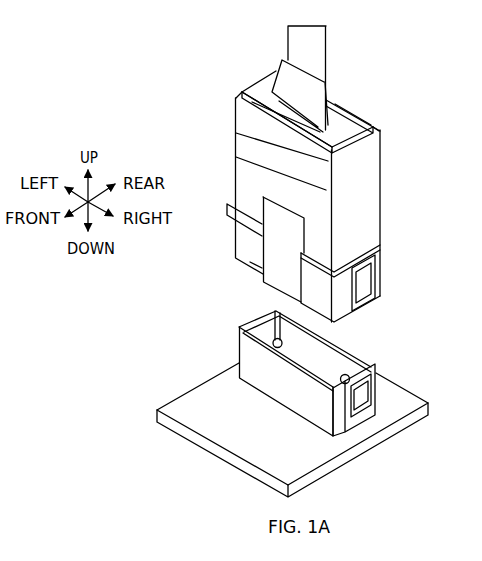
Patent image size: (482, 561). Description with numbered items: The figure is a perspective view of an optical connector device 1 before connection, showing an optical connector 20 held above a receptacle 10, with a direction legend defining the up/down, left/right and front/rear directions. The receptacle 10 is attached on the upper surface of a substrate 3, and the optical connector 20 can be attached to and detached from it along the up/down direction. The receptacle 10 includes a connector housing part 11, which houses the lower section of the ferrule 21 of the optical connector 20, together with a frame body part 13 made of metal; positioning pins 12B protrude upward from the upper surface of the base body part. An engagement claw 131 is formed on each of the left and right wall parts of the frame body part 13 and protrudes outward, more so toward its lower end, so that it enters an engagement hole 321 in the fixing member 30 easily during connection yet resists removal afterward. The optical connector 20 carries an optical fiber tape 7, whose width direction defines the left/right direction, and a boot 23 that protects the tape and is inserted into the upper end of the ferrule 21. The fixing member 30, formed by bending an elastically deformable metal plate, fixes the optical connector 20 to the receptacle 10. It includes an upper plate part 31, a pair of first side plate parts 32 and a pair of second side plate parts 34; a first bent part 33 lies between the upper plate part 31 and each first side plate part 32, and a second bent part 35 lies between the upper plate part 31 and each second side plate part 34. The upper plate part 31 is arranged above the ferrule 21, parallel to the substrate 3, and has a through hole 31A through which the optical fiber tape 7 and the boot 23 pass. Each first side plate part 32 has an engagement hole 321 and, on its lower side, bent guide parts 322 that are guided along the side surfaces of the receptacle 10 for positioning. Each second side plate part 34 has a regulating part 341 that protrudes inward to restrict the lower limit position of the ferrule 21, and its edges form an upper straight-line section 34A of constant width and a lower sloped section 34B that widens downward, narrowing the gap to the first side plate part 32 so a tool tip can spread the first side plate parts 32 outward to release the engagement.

The optical connector device 1 is at (198, 98).
The substrate 3 is at (192, 403).
The optical fiber tape 7 is at (313, 40).
The receptacle 10 is at (452, 317).
The connector housing part 11 is at (309, 373).
The positioning pins 12B is at (271, 337).
The frame body part 13 is at (255, 364).
The optical connector 20 is at (450, 120).
The ferrule 21 is at (256, 263).
The boot 23 is at (333, 95).
The fixing member 30 is at (307, 174).
The upper plate part 31 is at (352, 117).
The through hole 31A is at (342, 112).
The first side plate parts 32 is at (371, 226).
The first bent part 33 is at (248, 87).
The second side plate parts 34 is at (252, 210).
The straight-line section 34A is at (233, 135).
The sloped section 34B is at (233, 160).
The second bent part 35 is at (240, 90).
The engagement claw 131 is at (364, 400).
The engagement hole 321 is at (382, 273).
The guide parts 322 is at (232, 212).
The regulating part 341 is at (236, 259).